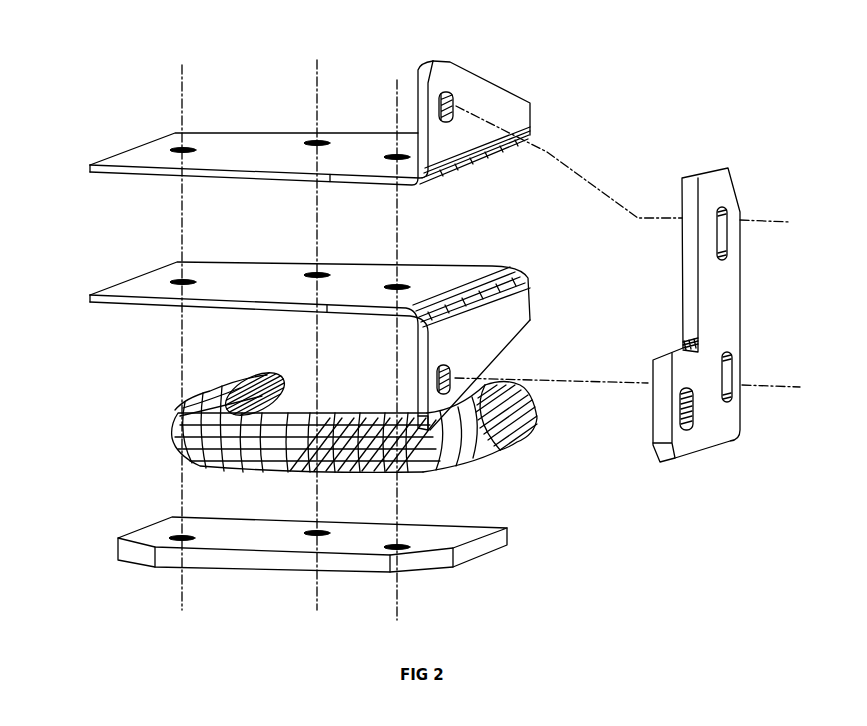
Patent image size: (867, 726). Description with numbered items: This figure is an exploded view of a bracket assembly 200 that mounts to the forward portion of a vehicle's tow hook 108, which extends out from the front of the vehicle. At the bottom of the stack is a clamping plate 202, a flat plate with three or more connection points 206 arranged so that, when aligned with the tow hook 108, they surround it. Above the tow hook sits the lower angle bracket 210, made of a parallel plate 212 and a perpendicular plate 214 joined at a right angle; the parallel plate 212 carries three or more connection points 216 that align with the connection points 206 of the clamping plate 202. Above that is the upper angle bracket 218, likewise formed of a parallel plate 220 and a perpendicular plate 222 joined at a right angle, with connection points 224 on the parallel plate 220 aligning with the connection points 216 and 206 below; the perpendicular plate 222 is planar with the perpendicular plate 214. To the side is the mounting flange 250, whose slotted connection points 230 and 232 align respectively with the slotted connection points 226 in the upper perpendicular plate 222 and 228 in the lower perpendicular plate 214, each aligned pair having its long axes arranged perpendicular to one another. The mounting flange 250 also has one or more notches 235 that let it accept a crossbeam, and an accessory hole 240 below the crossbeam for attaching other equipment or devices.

The bracket assembly 200 is at (93, 54).
The tow hook 108 is at (171, 431).
The clamping plate 202 is at (115, 549).
The connection points 206 is at (393, 545).
The lower angle bracket 210 is at (89, 299).
The parallel plate 212 is at (113, 288).
The perpendicular plate 214 is at (522, 333).
The connection points 216 is at (395, 284).
The upper angle bracket 218 is at (89, 168).
The parallel plate 220 is at (155, 145).
The perpendicular plate 222 is at (462, 72).
The connection points 224 is at (395, 154).
The connection point 226 is at (456, 102).
The connection point 228 is at (492, 266).
The connection point 230 is at (724, 207).
The connection point 232 is at (738, 348).
The notch 235 is at (676, 352).
The accessory hole 240 is at (691, 437).
The mounting flange 250 is at (708, 163).